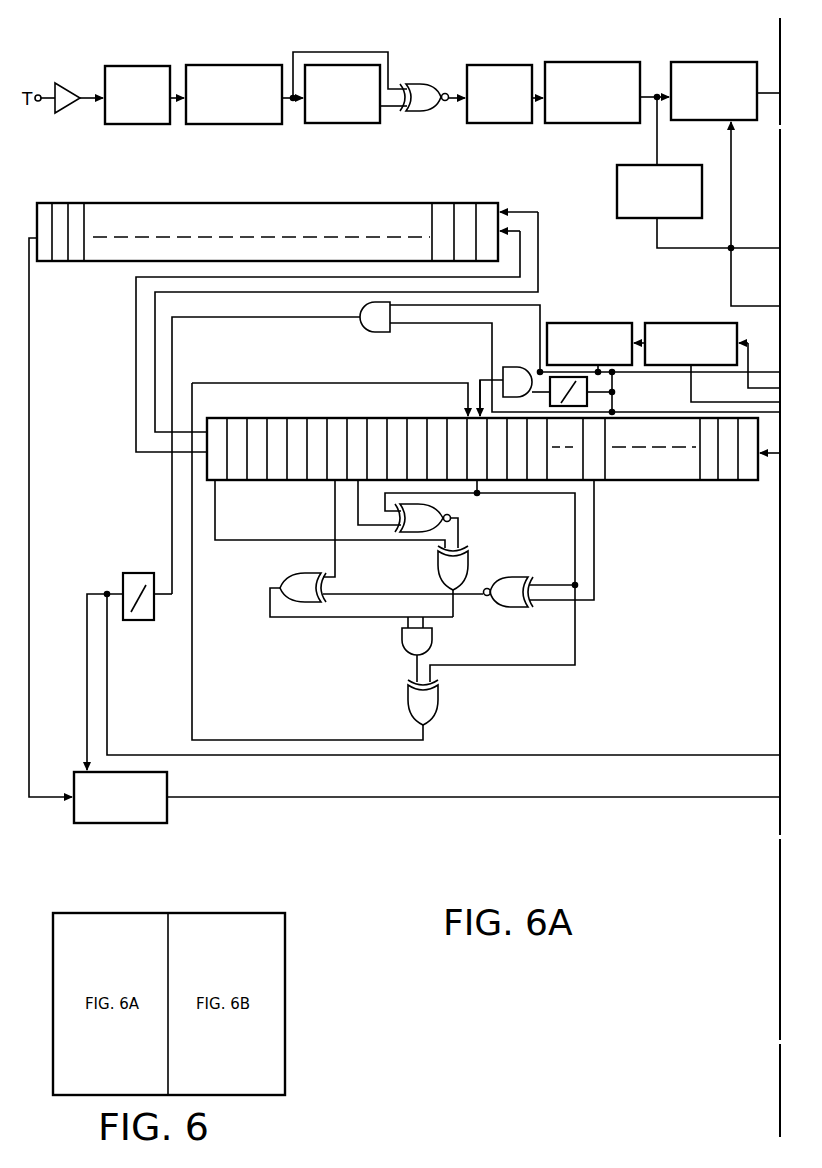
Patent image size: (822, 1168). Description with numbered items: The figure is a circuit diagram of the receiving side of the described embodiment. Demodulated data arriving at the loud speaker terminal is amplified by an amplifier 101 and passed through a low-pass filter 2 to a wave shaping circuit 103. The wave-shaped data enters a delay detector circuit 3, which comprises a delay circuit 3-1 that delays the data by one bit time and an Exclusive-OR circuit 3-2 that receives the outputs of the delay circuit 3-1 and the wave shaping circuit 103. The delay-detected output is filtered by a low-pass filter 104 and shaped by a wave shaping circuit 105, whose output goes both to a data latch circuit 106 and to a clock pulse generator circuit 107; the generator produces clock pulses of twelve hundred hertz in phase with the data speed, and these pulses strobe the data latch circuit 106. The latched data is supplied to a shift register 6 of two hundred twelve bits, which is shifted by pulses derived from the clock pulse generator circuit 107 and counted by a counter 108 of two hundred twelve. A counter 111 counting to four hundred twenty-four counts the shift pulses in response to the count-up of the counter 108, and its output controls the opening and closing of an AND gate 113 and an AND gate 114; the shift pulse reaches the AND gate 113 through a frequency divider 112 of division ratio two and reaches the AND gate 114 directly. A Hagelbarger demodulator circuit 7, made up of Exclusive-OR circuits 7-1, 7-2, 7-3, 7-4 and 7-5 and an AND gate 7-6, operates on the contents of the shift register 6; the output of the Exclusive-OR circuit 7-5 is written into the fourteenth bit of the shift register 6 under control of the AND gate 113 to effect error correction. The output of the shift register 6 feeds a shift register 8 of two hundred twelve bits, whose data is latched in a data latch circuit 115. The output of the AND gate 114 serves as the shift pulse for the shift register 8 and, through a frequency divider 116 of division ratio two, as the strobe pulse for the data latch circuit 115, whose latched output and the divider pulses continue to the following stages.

The amplifier 101 is at (66, 82).
The low-pass filter 2 is at (135, 66).
The wave shaping circuit 103 is at (230, 65).
The delay detector circuit 3 is at (378, 91).
The delay circuit 3-1 is at (333, 65).
The Exclusive-OR circuit 3-2 is at (447, 104).
The low-pass filter 104 is at (500, 65).
The wave shaping circuit 105 is at (596, 62).
The data latch circuit 106 is at (707, 62).
The clock pulse generator circuit 107 is at (617, 190).
The shift register 8 is at (343, 203).
The AND gate 114 is at (362, 332).
The AND gate 113 is at (503, 372).
The frequency divider 112 is at (588, 401).
The 424 counter 111 is at (590, 323).
The 212 counter 108 is at (678, 323).
The shift register 6 is at (672, 480).
The Hagelbarger demodulator circuit 7 is at (393, 561).
The Exclusive-OR circuit 7-1 is at (452, 510).
The Exclusive-OR circuit 7-2 is at (500, 580).
The Exclusive-OR circuit 7-3 is at (440, 576).
The Exclusive-OR circuit 7-4 is at (282, 582).
The Exclusive-OR circuit 7-5 is at (438, 705).
The AND gate 7-6 is at (433, 640).
The frequency divider 116 is at (135, 573).
The data latch circuit 115 is at (170, 817).